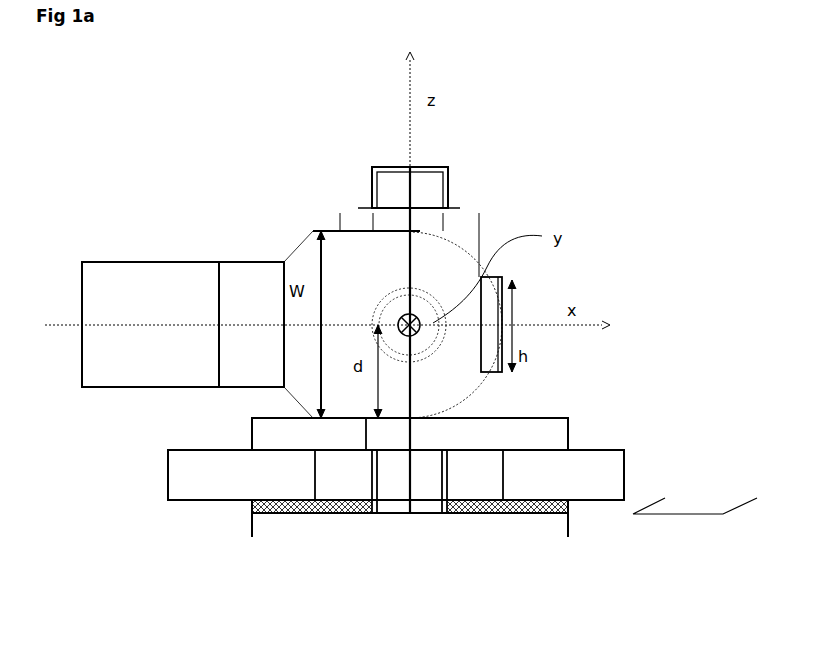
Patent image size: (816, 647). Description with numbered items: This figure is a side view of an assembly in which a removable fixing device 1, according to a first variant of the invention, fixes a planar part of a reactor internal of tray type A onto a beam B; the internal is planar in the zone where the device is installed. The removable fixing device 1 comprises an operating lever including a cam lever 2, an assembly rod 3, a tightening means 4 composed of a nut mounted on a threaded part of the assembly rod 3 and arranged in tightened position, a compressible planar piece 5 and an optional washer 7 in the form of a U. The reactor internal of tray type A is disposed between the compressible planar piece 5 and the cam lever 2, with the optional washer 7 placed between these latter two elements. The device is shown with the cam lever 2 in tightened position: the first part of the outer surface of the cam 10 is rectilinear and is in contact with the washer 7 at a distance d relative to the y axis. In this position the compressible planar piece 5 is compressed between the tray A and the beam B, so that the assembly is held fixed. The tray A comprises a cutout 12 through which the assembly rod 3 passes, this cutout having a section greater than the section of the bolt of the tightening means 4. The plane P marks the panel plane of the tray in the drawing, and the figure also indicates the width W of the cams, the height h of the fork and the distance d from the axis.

The removable fixing device 1 is at (293, 226).
The cam lever 2 is at (121, 298).
The assembly rod 3 is at (407, 500).
The tightening means 4 is at (457, 225).
The compressible planar piece 5 is at (568, 512).
The optional washer 7 is at (559, 449).
The first part of the outer surface of a cam 10 is at (332, 418).
The cutout in the internal of tray type 12 is at (342, 485).
The reactor internal of tray type A is at (600, 465).
The beam B is at (517, 518).
The panel plane P is at (695, 502).